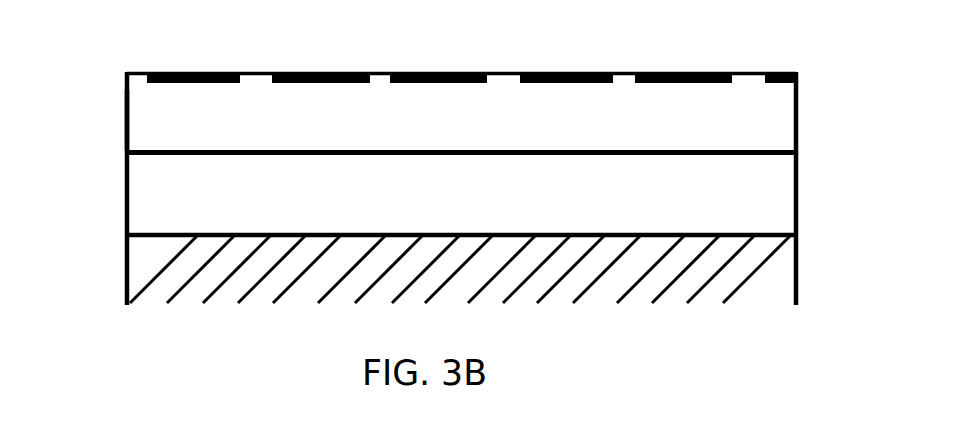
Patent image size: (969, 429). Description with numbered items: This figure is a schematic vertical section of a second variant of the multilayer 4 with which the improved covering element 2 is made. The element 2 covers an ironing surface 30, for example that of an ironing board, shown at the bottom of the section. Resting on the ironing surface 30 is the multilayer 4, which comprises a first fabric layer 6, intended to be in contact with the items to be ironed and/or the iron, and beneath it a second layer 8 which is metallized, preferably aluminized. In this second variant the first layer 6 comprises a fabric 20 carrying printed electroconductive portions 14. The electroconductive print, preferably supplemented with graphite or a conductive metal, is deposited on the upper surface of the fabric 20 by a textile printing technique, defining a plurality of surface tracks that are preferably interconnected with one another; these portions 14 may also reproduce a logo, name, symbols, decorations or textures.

The element 2 is at (449, 159).
The multilayer 4 is at (797, 113).
The first fabric layer 6 is at (492, 76).
The second layer 8 is at (765, 197).
The printed electroconductive portions 14 is at (667, 71).
The fabric 20 is at (152, 120).
The ironing surface 30 is at (755, 275).